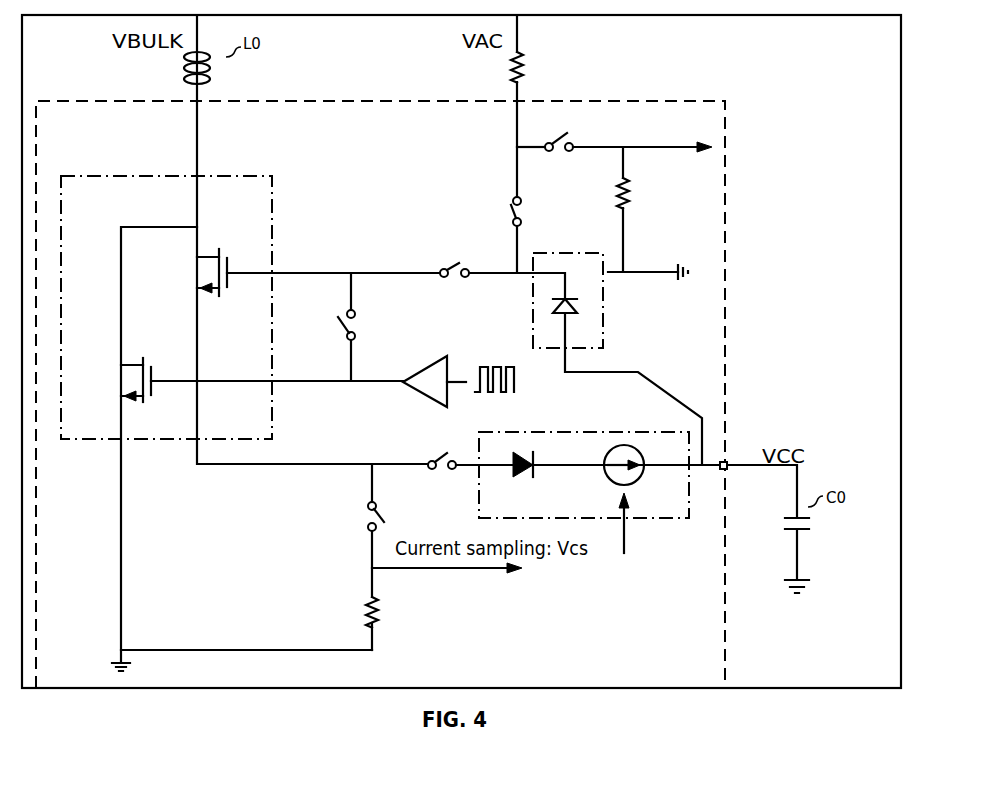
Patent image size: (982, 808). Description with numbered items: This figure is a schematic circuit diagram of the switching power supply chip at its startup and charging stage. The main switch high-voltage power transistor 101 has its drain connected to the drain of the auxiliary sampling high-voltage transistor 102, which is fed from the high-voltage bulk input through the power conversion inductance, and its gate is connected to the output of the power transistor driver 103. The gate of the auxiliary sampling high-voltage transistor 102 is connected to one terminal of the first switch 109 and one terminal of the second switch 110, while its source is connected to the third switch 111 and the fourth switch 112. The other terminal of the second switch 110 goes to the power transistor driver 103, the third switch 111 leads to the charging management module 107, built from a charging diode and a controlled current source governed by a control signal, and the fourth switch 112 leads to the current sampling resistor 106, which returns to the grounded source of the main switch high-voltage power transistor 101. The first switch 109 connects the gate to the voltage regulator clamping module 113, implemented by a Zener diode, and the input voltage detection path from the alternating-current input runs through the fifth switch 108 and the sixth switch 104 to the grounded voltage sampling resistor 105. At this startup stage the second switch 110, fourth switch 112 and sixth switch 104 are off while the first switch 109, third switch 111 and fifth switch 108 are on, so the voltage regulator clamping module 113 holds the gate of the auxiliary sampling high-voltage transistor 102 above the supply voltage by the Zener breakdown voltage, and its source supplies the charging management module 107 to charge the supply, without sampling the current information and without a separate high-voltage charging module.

The main switch high-voltage power transistor 101 is at (155, 366).
The auxiliary sampling high-voltage transistor 102 is at (226, 253).
The power transistor driver 103 is at (450, 357).
The sixth switch 104 is at (567, 126).
The voltage sampling resistor 105 is at (633, 193).
The current sampling resistor 106 is at (385, 615).
The VCC charging management module 107 is at (590, 428).
The fifth switch 108 is at (527, 215).
The first switch 109 is at (443, 263).
The second switch 110 is at (362, 327).
The third switch 111 is at (437, 452).
The fourth switch 112 is at (388, 508).
The voltage regulator clamping module 113 is at (612, 315).